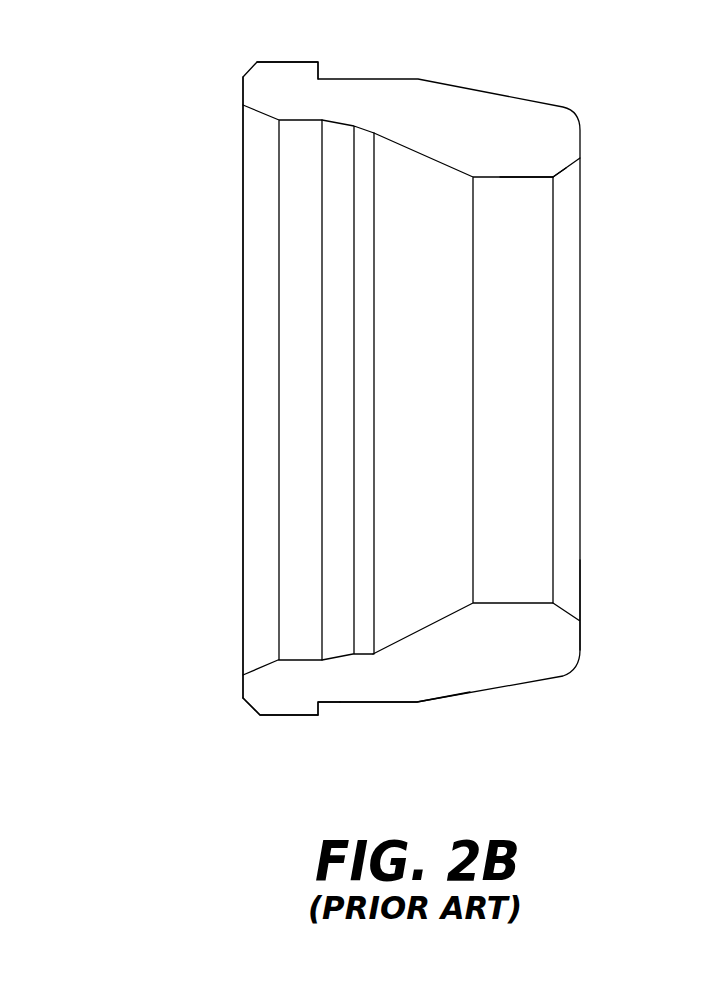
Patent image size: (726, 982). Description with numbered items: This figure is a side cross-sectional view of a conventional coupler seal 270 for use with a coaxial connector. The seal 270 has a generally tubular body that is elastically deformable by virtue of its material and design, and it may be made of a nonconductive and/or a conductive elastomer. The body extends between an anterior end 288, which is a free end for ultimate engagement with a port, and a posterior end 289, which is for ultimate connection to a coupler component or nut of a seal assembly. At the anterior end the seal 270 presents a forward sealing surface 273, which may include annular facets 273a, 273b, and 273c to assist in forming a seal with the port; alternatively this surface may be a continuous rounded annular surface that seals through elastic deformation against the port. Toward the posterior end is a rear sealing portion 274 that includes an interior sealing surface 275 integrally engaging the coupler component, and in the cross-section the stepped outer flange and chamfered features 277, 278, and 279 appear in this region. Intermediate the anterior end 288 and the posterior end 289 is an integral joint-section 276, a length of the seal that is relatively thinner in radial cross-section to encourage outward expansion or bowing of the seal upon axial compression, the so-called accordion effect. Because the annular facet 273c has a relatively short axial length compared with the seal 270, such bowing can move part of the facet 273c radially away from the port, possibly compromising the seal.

The seal 270 is at (588, 105).
The forward sealing surface 273 is at (592, 628).
The annular facet 273a is at (562, 174).
The annular facet 273b is at (560, 172).
The annular facet 273c is at (510, 177).
The rear sealing portion 274 is at (227, 675).
The interior sealing surface 275 is at (302, 660).
The integral joint-section 276 is at (407, 713).
The chamfered edge 277 is at (268, 717).
The flange 278 is at (282, 62).
The step 279 is at (322, 705).
The anterior end 288 is at (630, 330).
The posterior end 289 is at (226, 368).